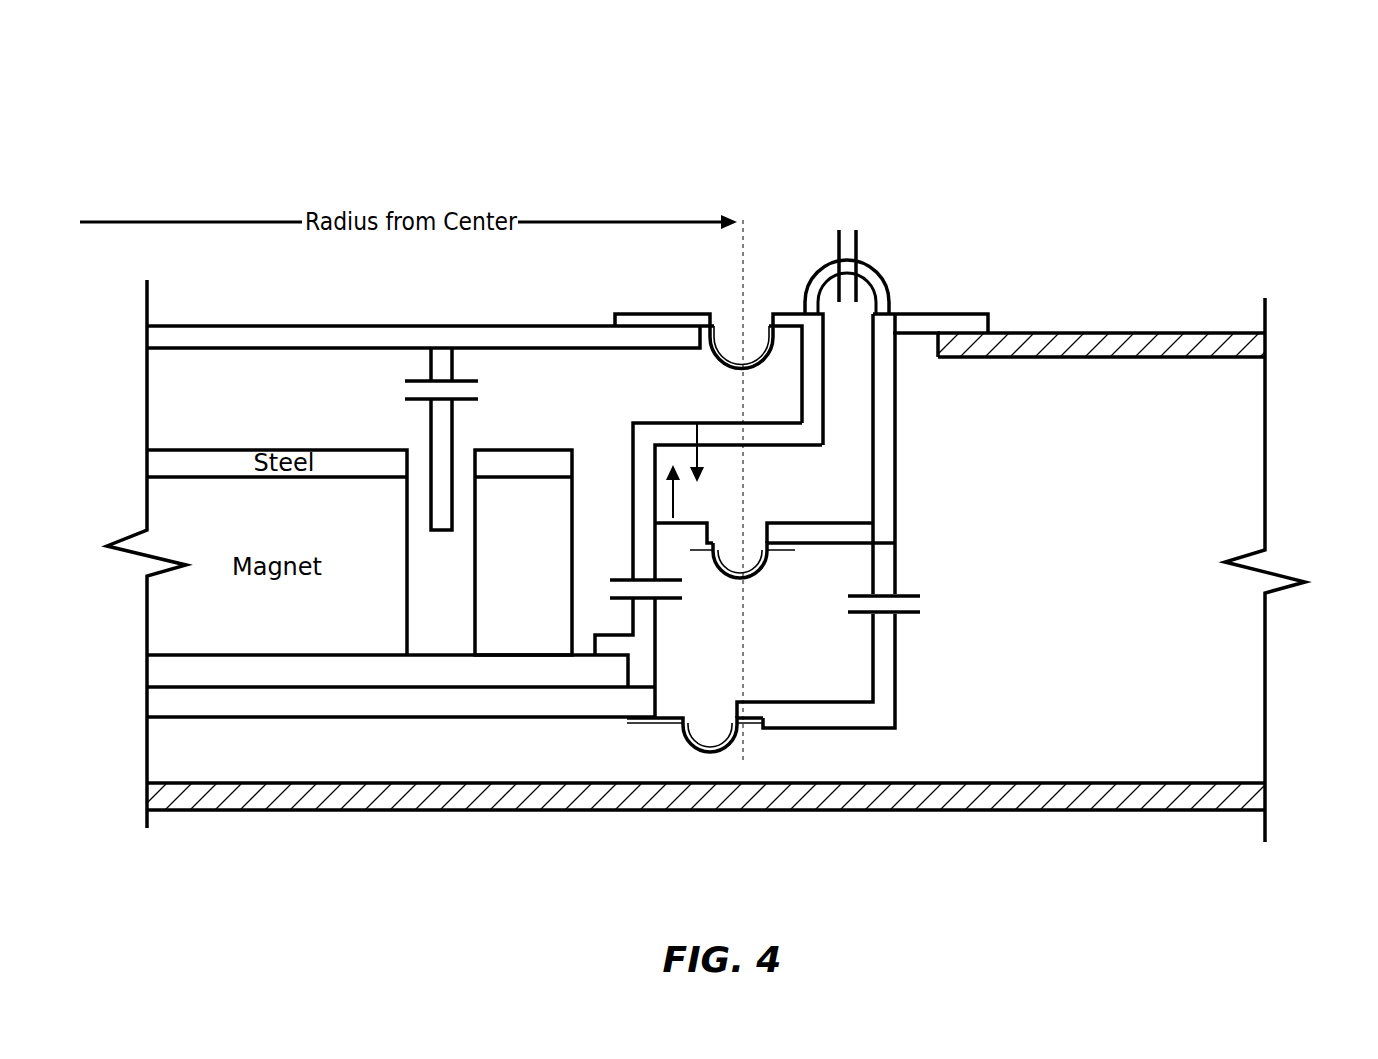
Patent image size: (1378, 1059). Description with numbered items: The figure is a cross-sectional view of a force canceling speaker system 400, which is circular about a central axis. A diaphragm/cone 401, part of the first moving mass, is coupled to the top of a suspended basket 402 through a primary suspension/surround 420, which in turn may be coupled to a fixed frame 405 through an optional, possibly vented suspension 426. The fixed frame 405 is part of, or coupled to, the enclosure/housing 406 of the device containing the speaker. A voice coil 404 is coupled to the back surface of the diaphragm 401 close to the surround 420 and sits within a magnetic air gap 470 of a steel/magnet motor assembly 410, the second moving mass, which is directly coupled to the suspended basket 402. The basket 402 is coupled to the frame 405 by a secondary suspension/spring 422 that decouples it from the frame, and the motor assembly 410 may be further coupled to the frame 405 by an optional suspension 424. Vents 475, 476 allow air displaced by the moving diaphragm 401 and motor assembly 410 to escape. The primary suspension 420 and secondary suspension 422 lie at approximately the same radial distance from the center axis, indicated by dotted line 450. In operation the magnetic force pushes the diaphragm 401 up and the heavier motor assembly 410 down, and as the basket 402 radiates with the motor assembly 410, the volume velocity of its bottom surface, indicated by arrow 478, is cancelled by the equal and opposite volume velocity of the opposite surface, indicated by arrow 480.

The force canceling speaker system 400 is at (1266, 136).
The diaphragm/cone 401 is at (440, 325).
The suspended basket 402 is at (666, 432).
The voice coil 404 is at (440, 470).
The fixed frame 405 is at (937, 315).
The enclosure/housing 406 is at (1085, 333).
The motor assembly 410 is at (500, 635).
The primary suspension/surround 420 is at (700, 318).
The secondary suspension/spring 422 is at (727, 575).
The optional suspension 424 is at (727, 748).
The optional suspension 426 is at (883, 285).
The dotted line 450 is at (745, 232).
The magnetic air gap 470 is at (455, 583).
The vent 475 is at (908, 605).
The vent 476 is at (633, 582).
The arrow 478 is at (703, 462).
The arrow 480 is at (678, 498).